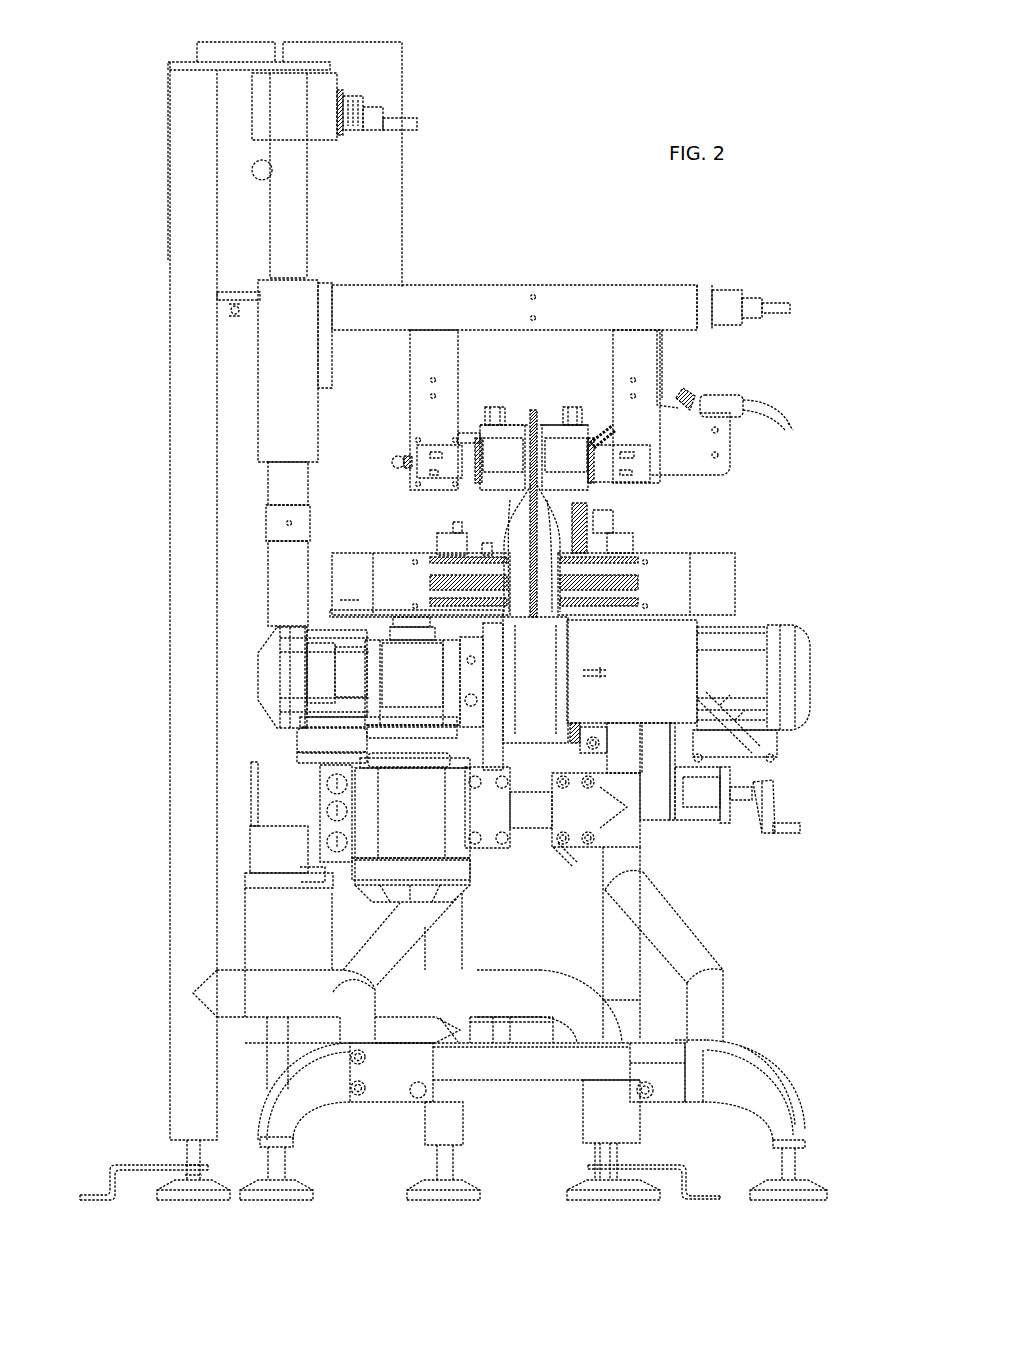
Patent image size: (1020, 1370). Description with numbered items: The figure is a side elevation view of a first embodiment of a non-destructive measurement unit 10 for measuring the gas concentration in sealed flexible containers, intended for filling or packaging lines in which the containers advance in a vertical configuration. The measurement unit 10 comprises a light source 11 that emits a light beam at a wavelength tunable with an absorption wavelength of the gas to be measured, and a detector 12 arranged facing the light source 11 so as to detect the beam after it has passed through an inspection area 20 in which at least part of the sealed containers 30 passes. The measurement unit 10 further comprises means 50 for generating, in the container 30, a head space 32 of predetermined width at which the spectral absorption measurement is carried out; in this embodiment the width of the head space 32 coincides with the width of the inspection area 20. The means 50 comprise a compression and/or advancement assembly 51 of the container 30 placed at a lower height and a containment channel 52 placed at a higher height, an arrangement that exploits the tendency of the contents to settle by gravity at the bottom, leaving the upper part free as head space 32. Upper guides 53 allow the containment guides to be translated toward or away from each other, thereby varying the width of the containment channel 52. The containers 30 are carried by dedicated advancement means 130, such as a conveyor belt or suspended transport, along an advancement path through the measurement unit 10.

The non-destructive measurement unit 10 is at (136, 514).
The light source 11 is at (688, 392).
The detector 12 is at (398, 458).
The inspection area 20 is at (531, 452).
The sealed container 30 is at (518, 517).
The head space 32 is at (533, 452).
The means for generating a head space 50 is at (885, 498).
The compression and/or advancement assembly 51 is at (723, 591).
The containment channel 52 is at (742, 454).
The upper guides 53 is at (581, 296).
The advancement means 130 is at (537, 678).